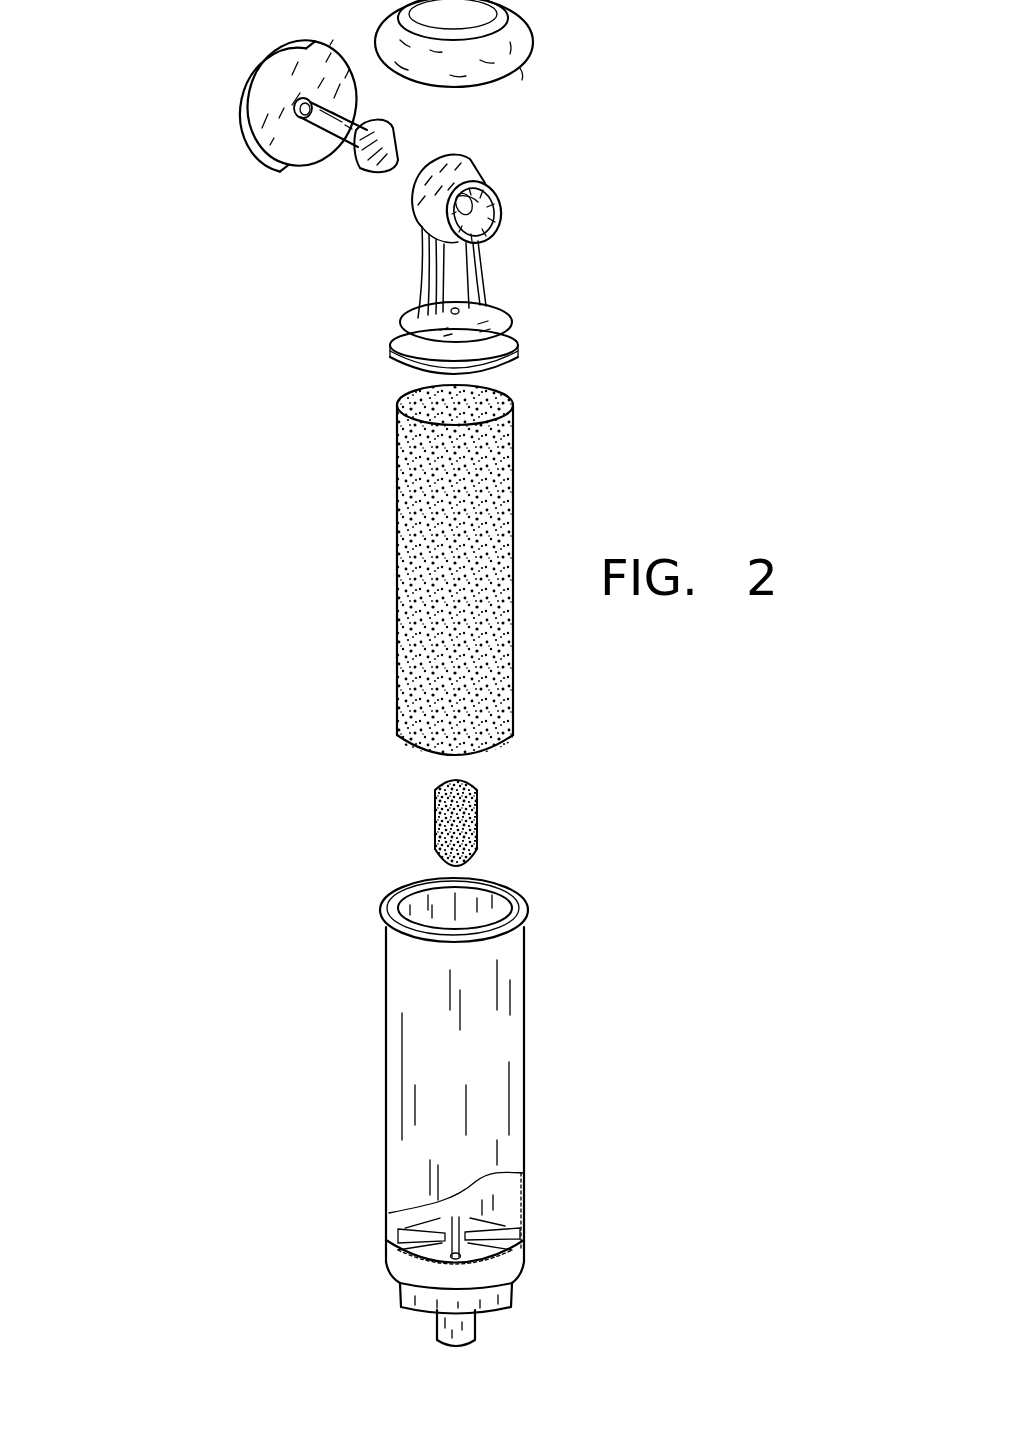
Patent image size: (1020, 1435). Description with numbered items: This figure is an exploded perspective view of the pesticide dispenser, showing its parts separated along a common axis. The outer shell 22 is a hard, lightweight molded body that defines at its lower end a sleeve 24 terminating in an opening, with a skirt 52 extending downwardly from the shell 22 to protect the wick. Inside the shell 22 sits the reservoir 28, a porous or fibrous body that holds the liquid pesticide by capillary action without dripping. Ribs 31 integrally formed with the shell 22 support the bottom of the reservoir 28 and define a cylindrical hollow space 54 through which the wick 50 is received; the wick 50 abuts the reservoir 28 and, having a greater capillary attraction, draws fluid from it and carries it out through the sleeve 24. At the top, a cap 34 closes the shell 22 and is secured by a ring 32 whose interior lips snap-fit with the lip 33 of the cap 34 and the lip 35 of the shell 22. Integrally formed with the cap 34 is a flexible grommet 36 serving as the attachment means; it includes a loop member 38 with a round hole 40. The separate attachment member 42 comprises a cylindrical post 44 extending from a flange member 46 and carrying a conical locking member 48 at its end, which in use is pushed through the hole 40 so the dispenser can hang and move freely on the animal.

The outer shell 22 is at (464, 1111).
The sleeve 24 is at (468, 1328).
The reservoir 28 is at (485, 513).
The ribs 31 is at (398, 1252).
The ring 32 is at (515, 65).
The lip 33 is at (518, 352).
The cap 34 is at (512, 312).
The lip 35 is at (525, 905).
The flexible grommet 36 is at (536, 243).
The loop member 38 is at (516, 179).
The round hole 40 is at (500, 193).
The attachment member 42 is at (250, 137).
The cylindrical post 44 is at (320, 130).
The flange member 46 is at (245, 140).
The conical locking member 48 is at (380, 165).
The wick 50 is at (473, 830).
The skirt 52 is at (392, 1293).
The cylindrical hollow space 54 is at (448, 1238).